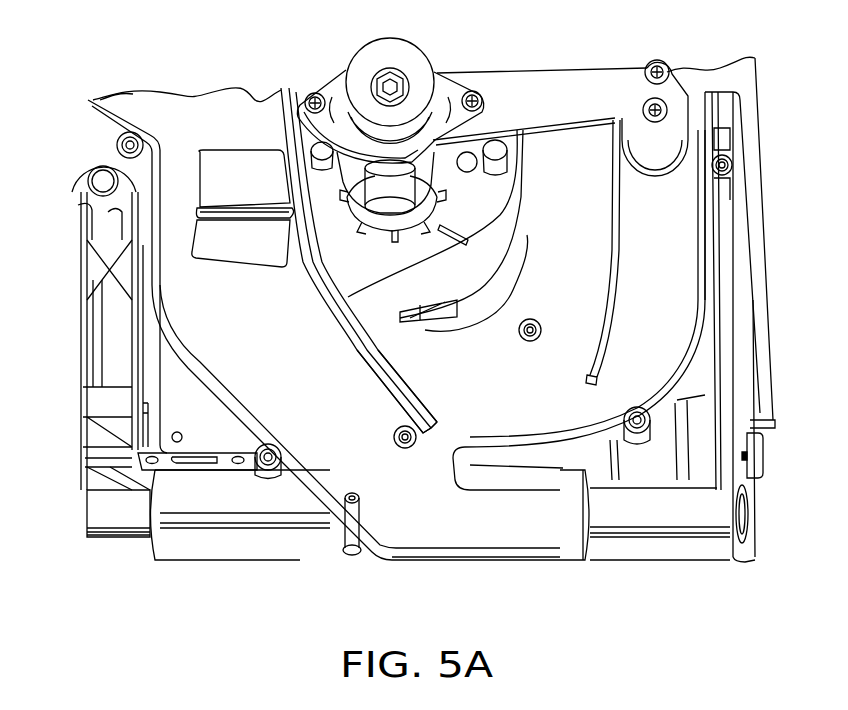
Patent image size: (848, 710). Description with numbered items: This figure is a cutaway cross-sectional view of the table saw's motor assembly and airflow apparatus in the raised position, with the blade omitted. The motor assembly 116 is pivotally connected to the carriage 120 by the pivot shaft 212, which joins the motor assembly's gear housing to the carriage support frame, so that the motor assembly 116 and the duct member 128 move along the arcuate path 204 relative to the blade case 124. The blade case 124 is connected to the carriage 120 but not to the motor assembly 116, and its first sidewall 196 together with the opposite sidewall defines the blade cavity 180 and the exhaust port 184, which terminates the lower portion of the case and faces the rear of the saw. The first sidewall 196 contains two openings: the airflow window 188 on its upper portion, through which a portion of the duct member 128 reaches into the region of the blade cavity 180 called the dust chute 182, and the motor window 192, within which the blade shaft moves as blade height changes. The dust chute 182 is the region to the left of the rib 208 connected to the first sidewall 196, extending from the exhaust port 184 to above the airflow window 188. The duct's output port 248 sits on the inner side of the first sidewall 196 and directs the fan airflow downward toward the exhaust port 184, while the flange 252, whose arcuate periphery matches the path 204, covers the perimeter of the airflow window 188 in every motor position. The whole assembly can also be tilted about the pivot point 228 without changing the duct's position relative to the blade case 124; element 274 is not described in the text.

The motor assembly 116 is at (447, 217).
The carriage 120 is at (83, 342).
The blade case 124 is at (707, 312).
The duct member 128 is at (241, 176).
The blade cavity 180 is at (567, 142).
The dust chute 182 is at (178, 142).
The exhaust port 184 is at (578, 535).
The airflow window 188 is at (298, 232).
The motor window 192 is at (523, 207).
The first sidewall 196 is at (193, 380).
The arcuate path 204 is at (538, 115).
The rib 208 is at (377, 367).
The pivot shaft 212 is at (103, 181).
The pivot point 228 is at (727, 133).
The output port 248 is at (218, 222).
The flange 252 is at (255, 245).
The plate top edge 274 is at (133, 97).